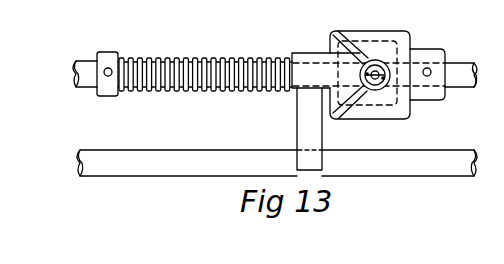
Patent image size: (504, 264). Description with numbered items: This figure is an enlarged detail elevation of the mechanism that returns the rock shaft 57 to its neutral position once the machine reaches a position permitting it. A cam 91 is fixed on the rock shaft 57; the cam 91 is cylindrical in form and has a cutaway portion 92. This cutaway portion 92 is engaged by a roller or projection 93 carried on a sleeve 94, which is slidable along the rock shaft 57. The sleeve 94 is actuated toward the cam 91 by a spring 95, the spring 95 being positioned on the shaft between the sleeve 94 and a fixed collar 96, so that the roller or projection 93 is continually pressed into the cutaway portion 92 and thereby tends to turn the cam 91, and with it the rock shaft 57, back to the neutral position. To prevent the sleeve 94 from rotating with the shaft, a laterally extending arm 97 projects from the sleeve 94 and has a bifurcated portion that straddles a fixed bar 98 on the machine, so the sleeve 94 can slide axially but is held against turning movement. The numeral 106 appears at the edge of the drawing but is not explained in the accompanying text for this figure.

The (cut-off) element 106 is at (32, 5).
The rock shaft 57 is at (78, 67).
The fixed collar 96 is at (102, 87).
The spring 95 is at (158, 58).
The sleeve 94 is at (312, 78).
The laterally extending arm 97 is at (300, 133).
The fixed bar 98 is at (111, 155).
The cutaway portion 92 is at (349, 40).
The roller or projection 93 is at (374, 80).
The cam 91 is at (412, 111).